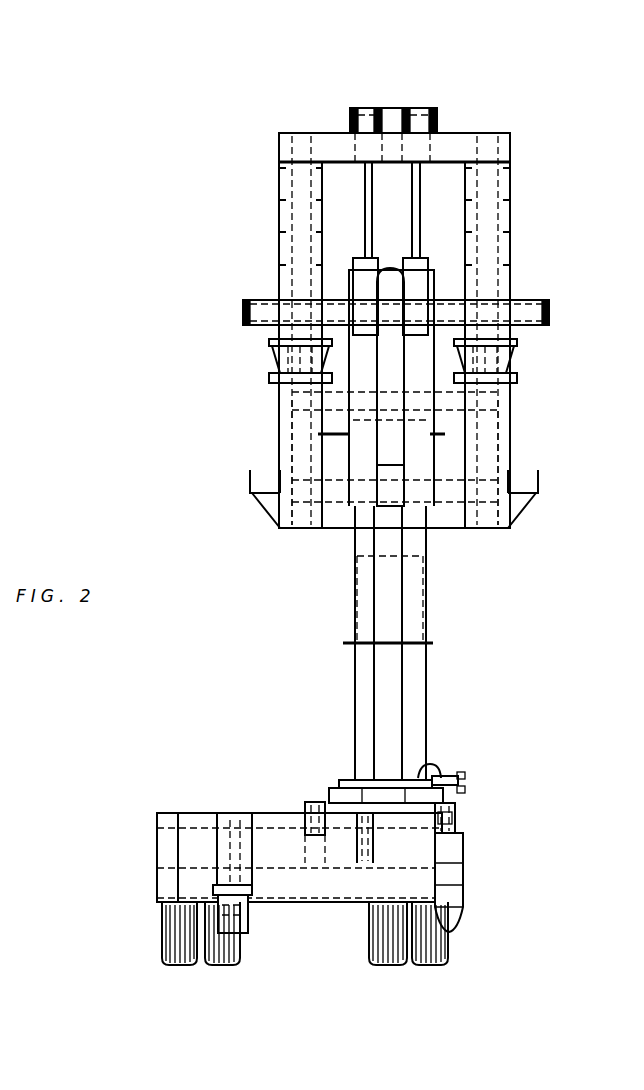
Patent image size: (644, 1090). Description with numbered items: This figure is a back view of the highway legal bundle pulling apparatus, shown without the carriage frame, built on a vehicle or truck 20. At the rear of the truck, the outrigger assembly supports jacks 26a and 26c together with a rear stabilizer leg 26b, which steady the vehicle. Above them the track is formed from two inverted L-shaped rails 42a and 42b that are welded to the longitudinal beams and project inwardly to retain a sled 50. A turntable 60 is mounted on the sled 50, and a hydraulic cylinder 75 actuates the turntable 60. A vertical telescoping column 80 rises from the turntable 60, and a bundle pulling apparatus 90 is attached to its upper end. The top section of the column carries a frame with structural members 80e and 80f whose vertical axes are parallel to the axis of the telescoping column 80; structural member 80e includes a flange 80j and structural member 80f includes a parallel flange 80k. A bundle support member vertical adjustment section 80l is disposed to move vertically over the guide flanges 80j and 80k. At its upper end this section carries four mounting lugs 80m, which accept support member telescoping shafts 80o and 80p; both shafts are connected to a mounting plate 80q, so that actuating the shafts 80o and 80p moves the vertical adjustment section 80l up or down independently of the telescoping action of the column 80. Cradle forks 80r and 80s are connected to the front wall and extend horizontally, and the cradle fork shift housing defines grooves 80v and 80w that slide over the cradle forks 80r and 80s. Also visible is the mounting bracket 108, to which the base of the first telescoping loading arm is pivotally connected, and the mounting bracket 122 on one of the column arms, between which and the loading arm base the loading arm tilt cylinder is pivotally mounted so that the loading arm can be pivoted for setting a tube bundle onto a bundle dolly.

The vehicle or truck 20 is at (128, 938).
The jack 26a is at (160, 884).
The rear stabilizer leg 26b is at (236, 925).
The jack 26c is at (461, 928).
The inverted L-shaped rail 42a is at (310, 802).
The inverted L-shaped rail 42b is at (455, 806).
The sled 50 is at (452, 818).
The turntable 60 is at (330, 770).
The hydraulic cylinder 75 is at (435, 764).
The telescoping column 80 is at (310, 608).
The structural member 80e is at (282, 455).
The structural member 80f is at (498, 457).
The flange 80j is at (280, 428).
The flange 80k is at (507, 430).
The bundle support member vertical adjustment section 80l is at (268, 231).
The mounting lugs 80m is at (350, 115).
The support member telescoping shaft 80o is at (367, 187).
The support member telescoping shaft 80p is at (420, 188).
The mounting plate 80q is at (400, 506).
The cradle fork 80r is at (270, 380).
The cradle fork 80s is at (517, 380).
The groove 80v is at (268, 356).
The groove 80w is at (517, 356).
The bundle pulling apparatus 90 is at (200, 437).
The mounting bracket 108 is at (250, 483).
The mounting bracket 122 is at (247, 300).